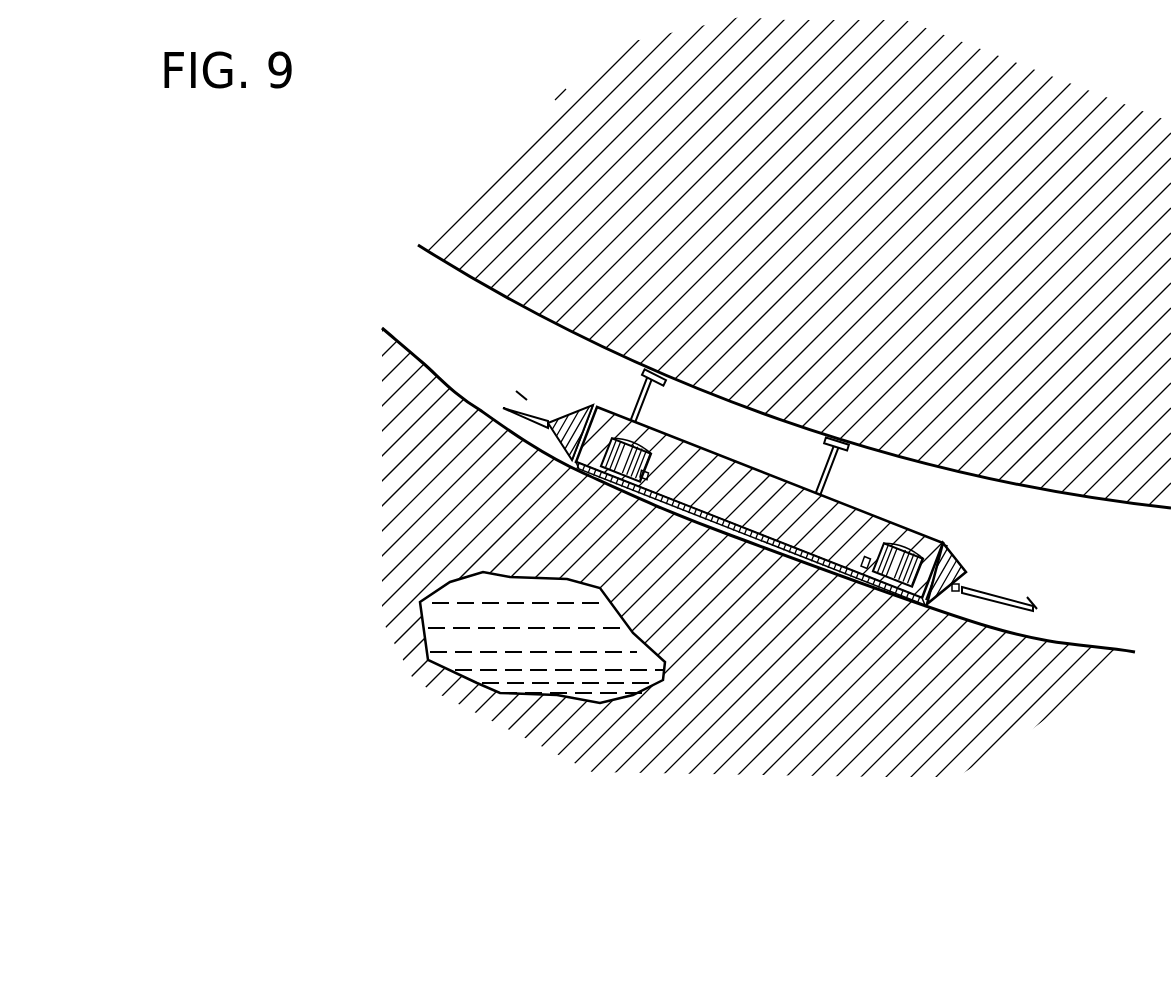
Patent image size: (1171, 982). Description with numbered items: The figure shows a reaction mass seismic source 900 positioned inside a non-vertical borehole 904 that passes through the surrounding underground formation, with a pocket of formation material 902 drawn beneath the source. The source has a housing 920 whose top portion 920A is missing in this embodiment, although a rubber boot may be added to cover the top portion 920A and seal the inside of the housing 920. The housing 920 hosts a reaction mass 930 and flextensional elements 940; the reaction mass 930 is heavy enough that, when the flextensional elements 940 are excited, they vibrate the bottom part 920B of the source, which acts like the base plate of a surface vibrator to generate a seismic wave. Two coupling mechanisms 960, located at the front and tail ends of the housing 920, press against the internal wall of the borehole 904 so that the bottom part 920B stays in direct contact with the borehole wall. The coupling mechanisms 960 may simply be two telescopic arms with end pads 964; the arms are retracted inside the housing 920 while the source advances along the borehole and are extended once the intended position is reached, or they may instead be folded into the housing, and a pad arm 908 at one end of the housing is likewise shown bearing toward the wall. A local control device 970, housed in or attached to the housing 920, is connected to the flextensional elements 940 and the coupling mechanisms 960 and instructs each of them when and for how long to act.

The reaction mass seismic source 900 is at (893, 213).
The fluid pocket 902 is at (448, 640).
The non-vertical borehole 904 is at (457, 270).
The contact pad arm 908 is at (535, 412).
The housing 920 is at (708, 570).
The top portion of housing 920A is at (912, 516).
The bottom part of source 920B is at (790, 553).
The reaction mass 930 is at (759, 510).
The flextensional elements 940 is at (592, 455).
The coupling mechanisms 960 is at (658, 408).
The end pads 964 is at (643, 378).
The local control device 970 is at (960, 586).